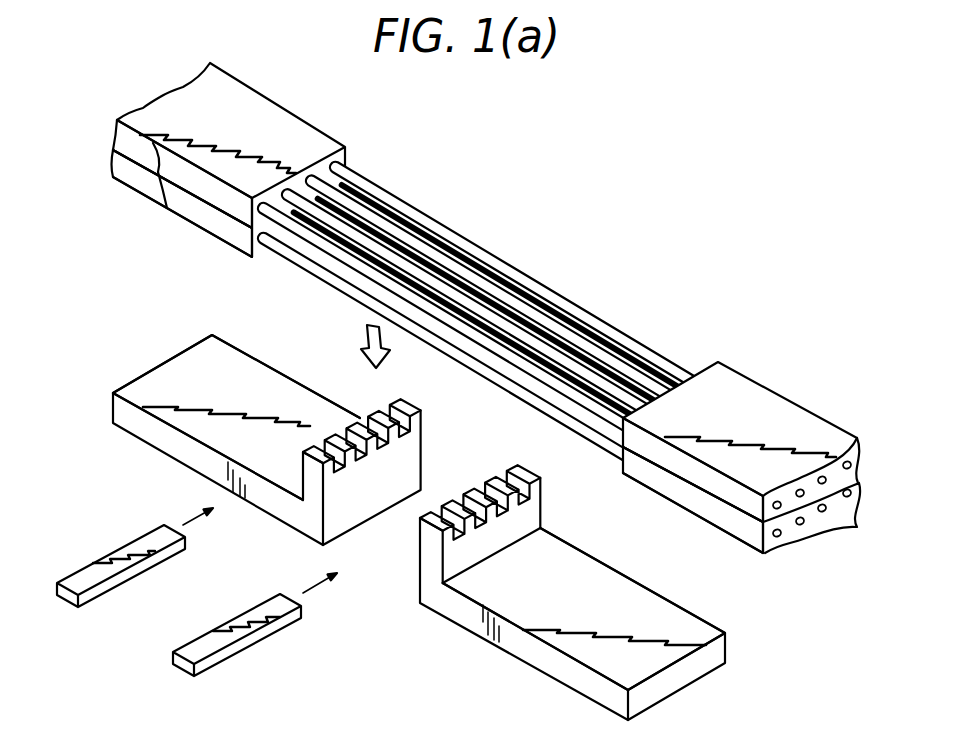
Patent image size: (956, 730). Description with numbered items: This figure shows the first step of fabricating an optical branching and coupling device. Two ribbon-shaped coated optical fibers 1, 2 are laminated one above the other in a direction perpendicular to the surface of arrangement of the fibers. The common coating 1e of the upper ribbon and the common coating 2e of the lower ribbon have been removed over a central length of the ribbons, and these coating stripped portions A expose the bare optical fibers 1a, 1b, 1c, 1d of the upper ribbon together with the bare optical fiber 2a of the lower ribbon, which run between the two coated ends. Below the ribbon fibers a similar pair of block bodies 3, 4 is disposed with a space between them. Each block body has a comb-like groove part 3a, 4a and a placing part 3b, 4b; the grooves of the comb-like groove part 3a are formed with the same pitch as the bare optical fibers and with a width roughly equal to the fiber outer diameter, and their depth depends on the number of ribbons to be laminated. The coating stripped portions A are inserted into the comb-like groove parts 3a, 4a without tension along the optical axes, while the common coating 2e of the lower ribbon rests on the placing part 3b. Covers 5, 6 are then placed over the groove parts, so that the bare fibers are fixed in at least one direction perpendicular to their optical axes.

The ribbon-shaped coated optical fiber 1 is at (486, 292).
The bare optical fiber 1a is at (418, 260).
The bare optical fiber 1b is at (394, 235).
The bare optical fiber 1c is at (378, 208).
The bare optical fiber 1d is at (368, 182).
The common coating 1e is at (300, 128).
The ribbon-shaped coated optical fiber 2 is at (486, 376).
The bare optical fiber 2a is at (300, 260).
The common coating 2e is at (203, 213).
The block body 3 is at (295, 424).
The comb-like groove part 3a is at (417, 397).
The placing part 3b is at (273, 395).
The block body 4 is at (595, 562).
The comb-like groove part 4a is at (507, 460).
The placing part 4b is at (592, 573).
The cover 5 is at (108, 585).
The cover 6 is at (230, 648).
The coating stripped portion A is at (544, 279).